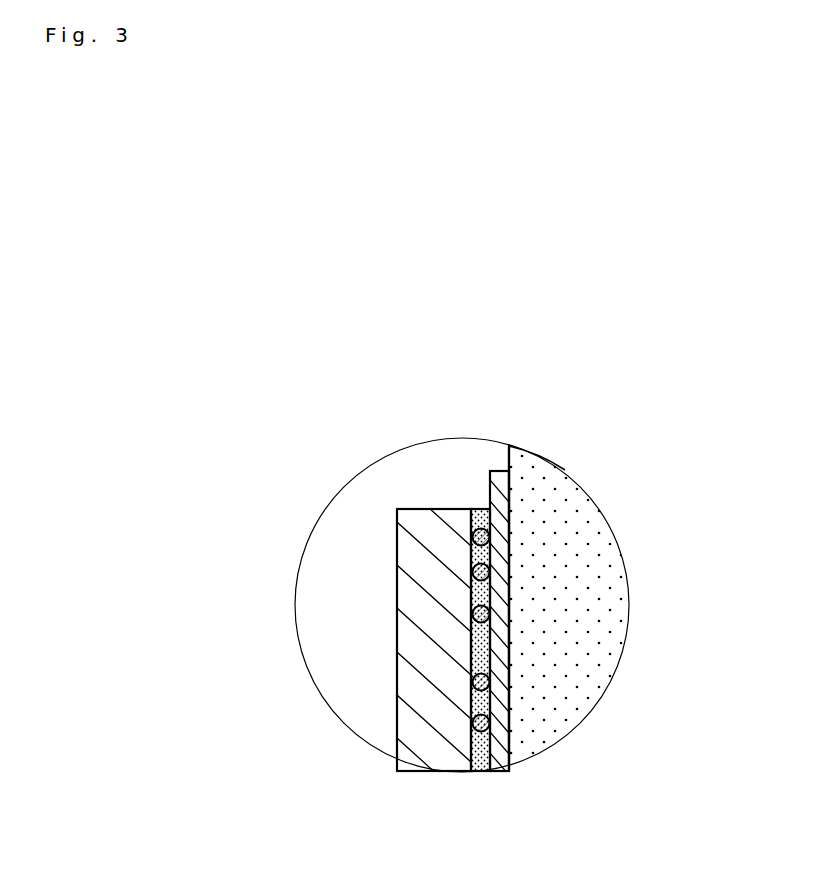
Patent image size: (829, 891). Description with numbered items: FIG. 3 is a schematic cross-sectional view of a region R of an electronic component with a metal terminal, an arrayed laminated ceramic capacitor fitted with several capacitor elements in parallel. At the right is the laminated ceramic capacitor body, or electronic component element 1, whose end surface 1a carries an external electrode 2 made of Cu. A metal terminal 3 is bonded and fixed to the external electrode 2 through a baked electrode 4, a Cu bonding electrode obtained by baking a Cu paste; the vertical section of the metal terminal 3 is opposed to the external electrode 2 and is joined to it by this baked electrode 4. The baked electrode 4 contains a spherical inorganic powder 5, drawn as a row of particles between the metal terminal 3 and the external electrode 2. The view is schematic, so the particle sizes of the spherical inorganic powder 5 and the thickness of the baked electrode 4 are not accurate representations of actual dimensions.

The region R is at (562, 463).
The laminated ceramic capacitor body 1 is at (553, 711).
The end surface 1a is at (507, 448).
The external electrode 2 is at (490, 493).
The metal terminal 3 is at (437, 517).
The baked electrode 4 is at (485, 650).
The spherical inorganic powder 5 is at (490, 585).